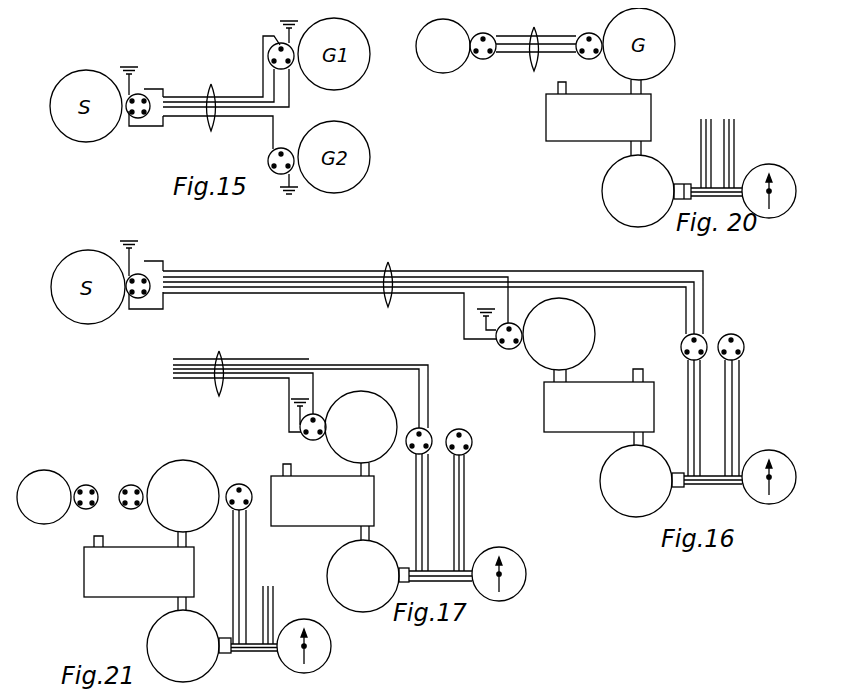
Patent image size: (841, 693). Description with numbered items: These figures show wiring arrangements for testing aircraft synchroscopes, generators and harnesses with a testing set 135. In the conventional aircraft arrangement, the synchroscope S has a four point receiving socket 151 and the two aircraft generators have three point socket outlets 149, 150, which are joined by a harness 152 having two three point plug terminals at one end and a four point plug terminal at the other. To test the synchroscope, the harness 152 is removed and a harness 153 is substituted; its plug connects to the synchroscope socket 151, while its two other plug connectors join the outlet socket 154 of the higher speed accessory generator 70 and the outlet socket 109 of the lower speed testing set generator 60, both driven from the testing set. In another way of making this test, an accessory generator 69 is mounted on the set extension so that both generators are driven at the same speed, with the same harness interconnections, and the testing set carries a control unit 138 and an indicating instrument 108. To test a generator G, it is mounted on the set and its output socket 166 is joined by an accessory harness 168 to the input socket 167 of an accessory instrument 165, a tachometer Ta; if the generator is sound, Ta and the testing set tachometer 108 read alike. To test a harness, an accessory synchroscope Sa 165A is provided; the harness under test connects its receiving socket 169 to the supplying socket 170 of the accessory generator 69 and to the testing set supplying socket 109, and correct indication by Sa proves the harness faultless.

In FIG. 15, the three point socket outlet 149 is at (290, 68).
In FIG. 15, the three point socket outlet 150 is at (281, 148).
In FIG. 15, the four point receiving socket 151 is at (140, 119).
In FIG. 16, the four point receiving socket 151 is at (141, 301).
In FIG. 15, the harness 152 is at (210, 132).
In FIG. 16, the harness 153 is at (387, 308).
In FIG. 17, the harness 153 is at (218, 397).
In FIG. 16, the outlet socket 154 is at (504, 348).
In FIG. 17, the outlet socket 154 is at (314, 442).
In FIG. 20, the accessory instrument 165 is at (450, 74).
In FIG. 21, the accessory synchroscope 165A is at (45, 467).
In FIG. 20, the output socket 166 is at (587, 60).
In FIG. 20, the input socket 167 is at (483, 60).
In FIG. 20, the accessory harness 168 is at (533, 72).
In FIG. 21, the receiving socket 169 is at (87, 485).
In FIG. 21, the supplying socket 170 is at (134, 485).
In FIG. 20, the control unit 138 is at (545, 118).
In FIG. 16, the testing set 135 is at (543, 404).
In FIG. 17, the testing set 135 is at (322, 495).
In FIG. 21, the testing set 135 is at (83, 578).
In FIG. 20, the testing set generator 60 is at (661, 171).
In FIG. 16, the testing set generator 60 is at (600, 471).
In FIG. 17, the testing set generator 60 is at (378, 546).
In FIG. 21, the testing set generator 60 is at (200, 621).
In FIG. 17, the accessory generator 69 is at (376, 401).
In FIG. 21, the accessory generator 69 is at (193, 469).
In FIG. 16, the accessory generator 70 is at (594, 341).
In FIG. 20, the testing set instrument 108 is at (767, 165).
In FIG. 16, the testing set instrument 108 is at (768, 451).
In FIG. 17, the testing set instrument 108 is at (499, 574).
In FIG. 21, the testing set instrument 108 is at (305, 631).
In FIG. 16, the outlet socket 109 is at (703, 348).
In FIG. 17, the outlet socket 109 is at (429, 434).
In FIG. 21, the outlet socket 109 is at (243, 480).